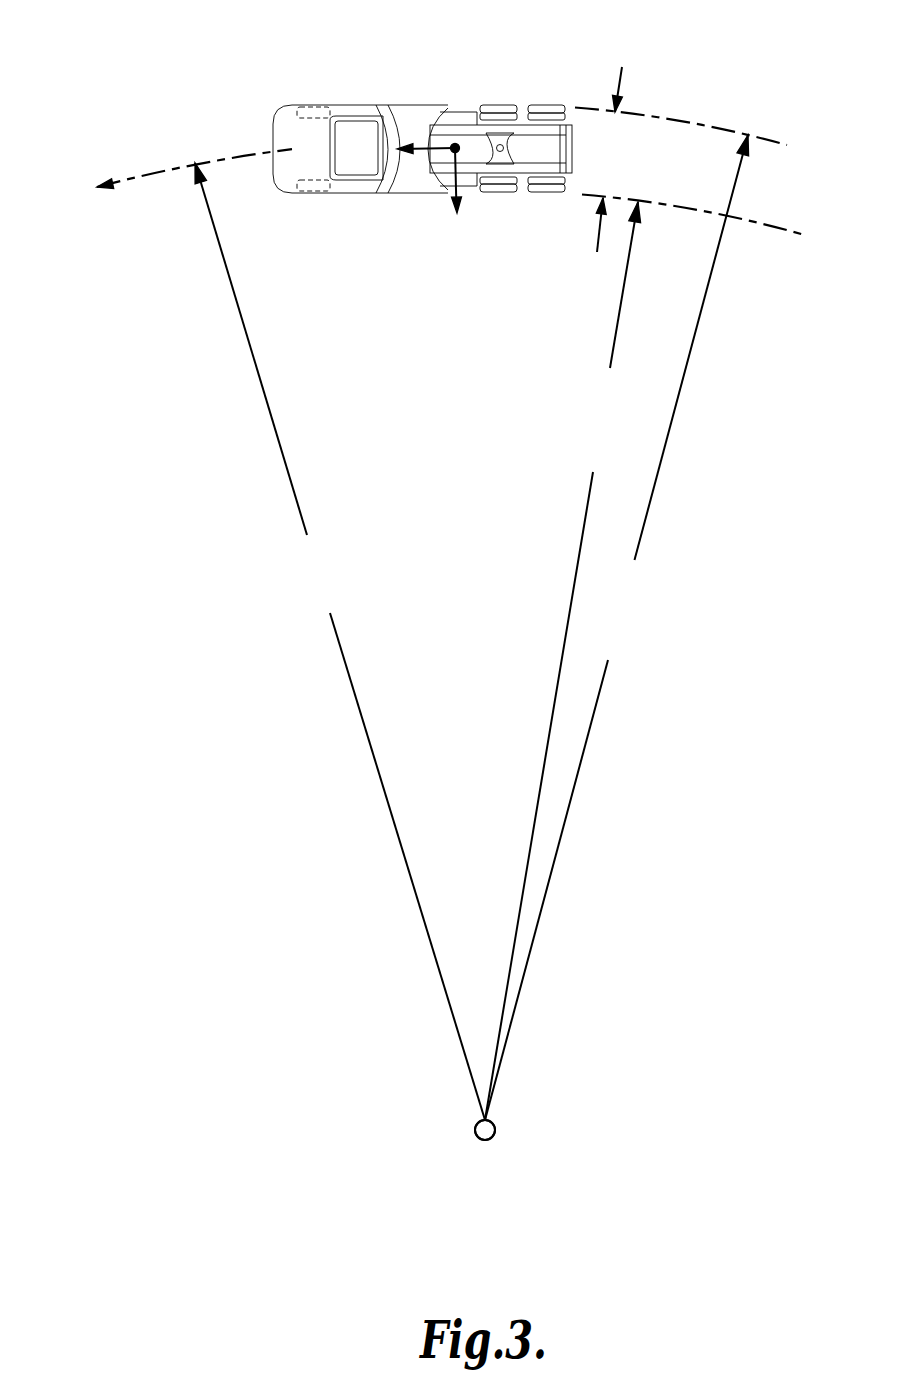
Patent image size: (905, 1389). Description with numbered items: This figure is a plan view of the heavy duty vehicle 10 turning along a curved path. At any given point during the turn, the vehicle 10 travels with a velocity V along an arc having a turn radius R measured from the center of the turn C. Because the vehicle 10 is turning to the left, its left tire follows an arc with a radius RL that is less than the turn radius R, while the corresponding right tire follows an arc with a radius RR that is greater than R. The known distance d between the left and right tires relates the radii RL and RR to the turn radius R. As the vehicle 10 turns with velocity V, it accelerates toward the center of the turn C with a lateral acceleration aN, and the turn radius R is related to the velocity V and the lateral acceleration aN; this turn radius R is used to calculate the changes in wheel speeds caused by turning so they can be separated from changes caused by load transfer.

The heavy duty vehicle 10 is at (473, 90).
The turn radius R is at (340, 641).
The left tire arc radius RL is at (563, 661).
The right tire arc radius RR is at (617, 627).
The distance between the left and right tires d is at (614, 143).
The center of the turn C is at (485, 1156).
The velocity V is at (420, 135).
The lateral acceleration aN is at (485, 199).